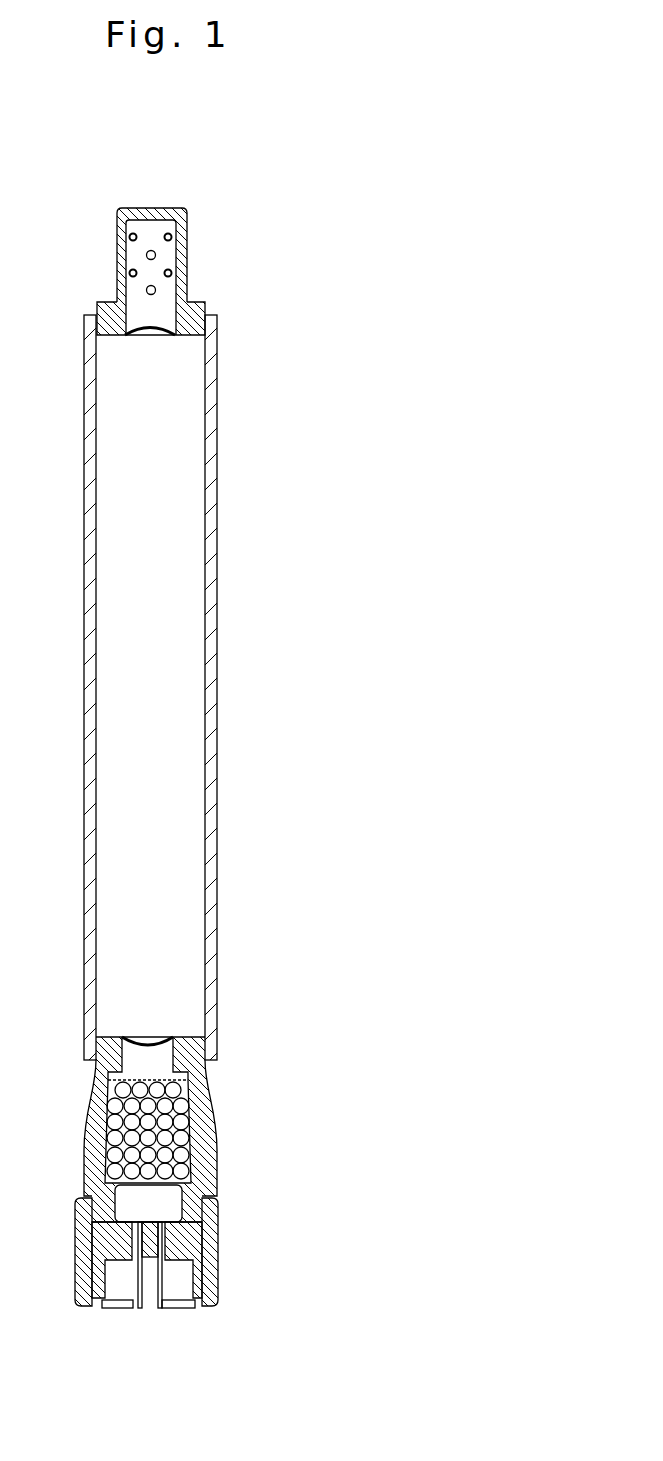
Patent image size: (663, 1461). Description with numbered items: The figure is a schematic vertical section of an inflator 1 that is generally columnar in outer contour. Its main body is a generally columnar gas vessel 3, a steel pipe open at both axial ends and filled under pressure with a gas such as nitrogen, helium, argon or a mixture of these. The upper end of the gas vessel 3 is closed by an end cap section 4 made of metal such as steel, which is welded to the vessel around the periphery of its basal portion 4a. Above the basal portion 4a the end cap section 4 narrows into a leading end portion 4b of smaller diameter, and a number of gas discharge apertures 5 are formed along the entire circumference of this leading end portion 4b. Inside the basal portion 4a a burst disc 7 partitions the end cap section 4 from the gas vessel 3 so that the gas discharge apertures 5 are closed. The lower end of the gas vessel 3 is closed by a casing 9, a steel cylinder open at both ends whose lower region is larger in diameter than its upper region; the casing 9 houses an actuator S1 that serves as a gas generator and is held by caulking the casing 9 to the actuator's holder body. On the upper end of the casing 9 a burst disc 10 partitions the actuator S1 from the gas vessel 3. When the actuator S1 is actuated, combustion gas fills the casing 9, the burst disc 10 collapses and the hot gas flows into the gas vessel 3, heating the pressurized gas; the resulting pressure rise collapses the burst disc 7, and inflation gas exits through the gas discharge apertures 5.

The inflator 1 is at (323, 293).
The gas vessel 3 is at (217, 617).
The end cap section 4 is at (197, 267).
The basal portion 4a is at (208, 327).
The leading end portion 4b is at (187, 215).
The gas discharge apertures 5 is at (127, 273).
The burst disc 7 is at (150, 337).
The casing 9 is at (212, 1102).
The burst disc 10 is at (150, 1033).
The actuator S1 is at (200, 1197).